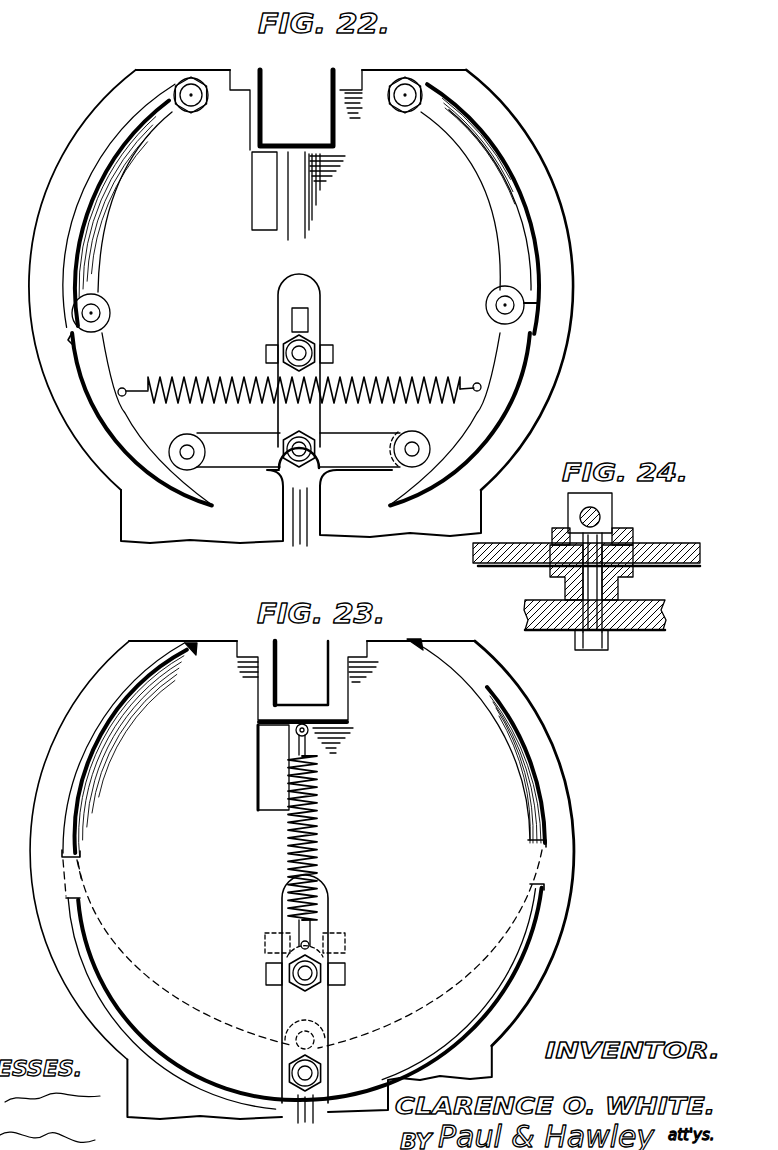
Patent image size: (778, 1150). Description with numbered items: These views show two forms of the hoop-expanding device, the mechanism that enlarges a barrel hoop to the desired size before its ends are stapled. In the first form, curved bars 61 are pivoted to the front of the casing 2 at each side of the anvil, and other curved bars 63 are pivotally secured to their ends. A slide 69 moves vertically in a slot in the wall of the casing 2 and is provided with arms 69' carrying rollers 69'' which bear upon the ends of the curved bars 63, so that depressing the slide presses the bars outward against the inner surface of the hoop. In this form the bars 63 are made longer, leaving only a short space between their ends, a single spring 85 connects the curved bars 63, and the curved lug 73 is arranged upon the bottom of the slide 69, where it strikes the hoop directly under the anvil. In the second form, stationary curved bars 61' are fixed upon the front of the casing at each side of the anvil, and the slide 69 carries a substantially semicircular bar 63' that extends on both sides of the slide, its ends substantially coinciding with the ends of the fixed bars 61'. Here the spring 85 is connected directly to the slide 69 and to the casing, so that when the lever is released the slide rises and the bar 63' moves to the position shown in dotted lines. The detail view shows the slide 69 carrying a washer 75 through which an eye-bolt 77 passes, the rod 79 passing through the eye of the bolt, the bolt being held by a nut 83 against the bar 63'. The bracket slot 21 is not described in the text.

In FIG. 22, the casing 2 is at (542, 178).
In FIG. 23, the casing 2 is at (561, 793).
In FIG. 24, the casing 2 is at (683, 557).
In FIG. 22, the anchor bracket slot 21 is at (258, 118).
In FIG. 22, the curved bars 61 is at (307, 205).
In FIG. 23, the stationary curved bars 61' is at (304, 748).
In FIG. 22, the curved bars 63 is at (302, 396).
In FIG. 23, the semicircular bar 63' is at (303, 979).
In FIG. 24, the semicircular bar 63' is at (602, 639).
In FIG. 22, the slide 69 is at (299, 435).
In FIG. 23, the slide 69 is at (319, 999).
In FIG. 24, the slide 69 is at (562, 573).
In FIG. 22, the arms 69' is at (298, 436).
In FIG. 22, the rollers 69'' is at (306, 435).
In FIG. 22, the curved lug 73 is at (292, 480).
In FIG. 24, the washers 75 is at (552, 536).
In FIG. 24, the eye-bolts 77 is at (570, 508).
In FIG. 22, the rod 79 is at (305, 322).
In FIG. 24, the rod 79 is at (601, 516).
In FIG. 24, the nut 83 is at (583, 641).
In FIG. 22, the spring 85 is at (363, 382).
In FIG. 23, the spring 85 is at (318, 818).